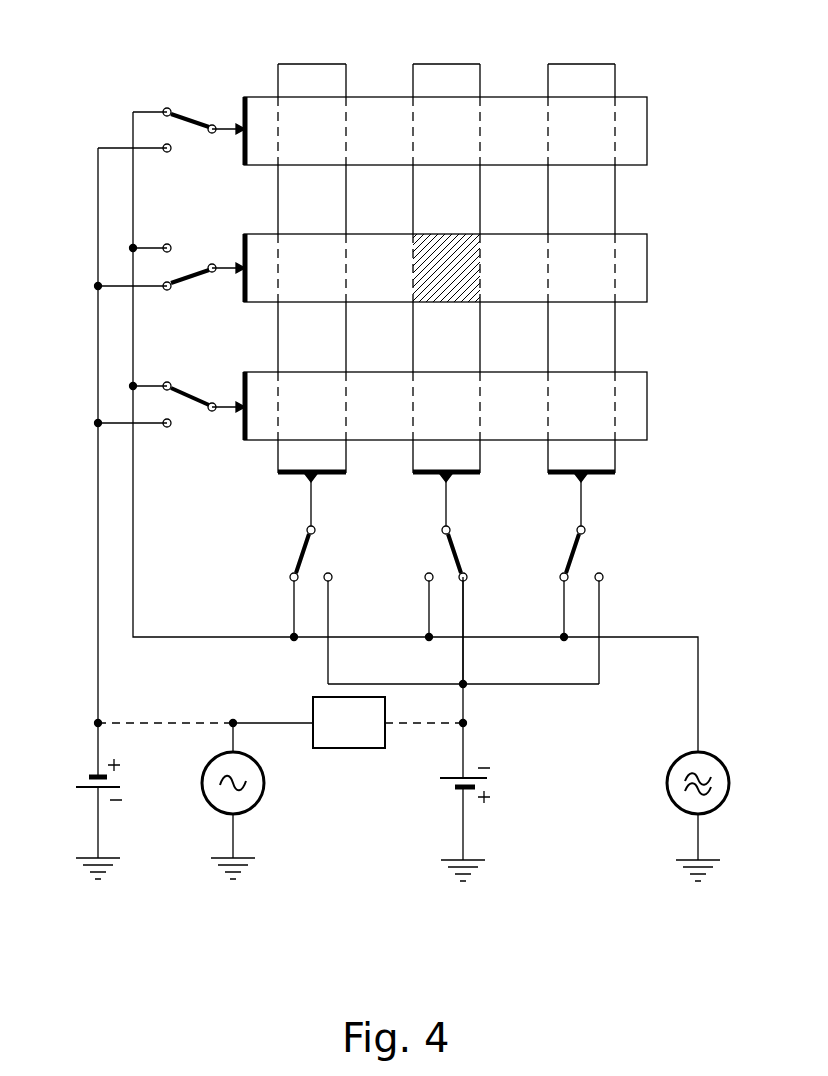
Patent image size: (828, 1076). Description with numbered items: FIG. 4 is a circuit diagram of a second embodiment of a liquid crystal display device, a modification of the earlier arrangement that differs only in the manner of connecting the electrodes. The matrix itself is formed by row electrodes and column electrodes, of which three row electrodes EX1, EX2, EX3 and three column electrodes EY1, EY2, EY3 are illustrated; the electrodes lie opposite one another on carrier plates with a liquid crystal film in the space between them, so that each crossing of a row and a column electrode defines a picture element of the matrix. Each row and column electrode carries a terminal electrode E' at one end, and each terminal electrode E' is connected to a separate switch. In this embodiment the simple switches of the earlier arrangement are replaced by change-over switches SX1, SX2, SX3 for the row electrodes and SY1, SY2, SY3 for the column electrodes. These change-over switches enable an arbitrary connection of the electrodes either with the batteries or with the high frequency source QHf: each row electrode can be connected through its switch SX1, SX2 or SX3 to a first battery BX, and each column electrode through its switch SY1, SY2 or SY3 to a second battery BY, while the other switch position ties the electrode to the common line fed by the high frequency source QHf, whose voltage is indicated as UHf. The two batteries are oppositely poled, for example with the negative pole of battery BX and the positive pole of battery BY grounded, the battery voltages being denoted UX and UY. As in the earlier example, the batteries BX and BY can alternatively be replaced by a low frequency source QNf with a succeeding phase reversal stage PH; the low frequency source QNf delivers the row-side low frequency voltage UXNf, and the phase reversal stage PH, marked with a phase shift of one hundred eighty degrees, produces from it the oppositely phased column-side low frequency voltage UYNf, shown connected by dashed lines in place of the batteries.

The row electrode EX1 is at (637, 131).
The row electrode EX2 is at (637, 270).
The row electrode EX3 is at (637, 408).
The column electrode EY1 is at (310, 76).
The column electrode EY2 is at (444, 77).
The column electrode EY3 is at (578, 78).
The terminal electrode E' is at (416, 298).
The change-over switch SX1 is at (167, 146).
The change-over switch SX2 is at (166, 285).
The change-over switch SX3 is at (166, 422).
The change-over switch SY1 is at (326, 581).
The change-over switch SY2 is at (462, 581).
The change-over switch SY3 is at (598, 581).
The phase reversal stage PH is at (349, 741).
The low-frequency row voltage UXNf is at (269, 710).
The low-frequency column voltage UYNf is at (420, 710).
The row bias voltage UX is at (143, 750).
The column bias voltage UY is at (433, 750).
The first battery BX is at (79, 819).
The second battery BY is at (485, 819).
The low frequency source QNf is at (245, 801).
The high frequency source QHf is at (685, 816).
The high-frequency voltage UHf is at (672, 733).